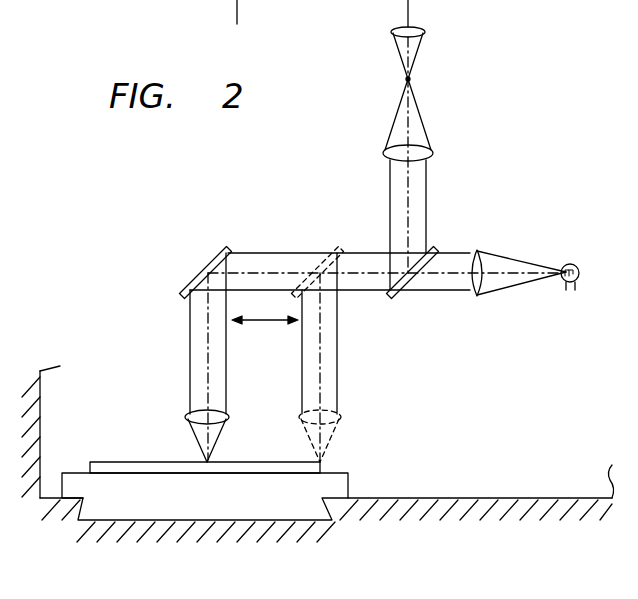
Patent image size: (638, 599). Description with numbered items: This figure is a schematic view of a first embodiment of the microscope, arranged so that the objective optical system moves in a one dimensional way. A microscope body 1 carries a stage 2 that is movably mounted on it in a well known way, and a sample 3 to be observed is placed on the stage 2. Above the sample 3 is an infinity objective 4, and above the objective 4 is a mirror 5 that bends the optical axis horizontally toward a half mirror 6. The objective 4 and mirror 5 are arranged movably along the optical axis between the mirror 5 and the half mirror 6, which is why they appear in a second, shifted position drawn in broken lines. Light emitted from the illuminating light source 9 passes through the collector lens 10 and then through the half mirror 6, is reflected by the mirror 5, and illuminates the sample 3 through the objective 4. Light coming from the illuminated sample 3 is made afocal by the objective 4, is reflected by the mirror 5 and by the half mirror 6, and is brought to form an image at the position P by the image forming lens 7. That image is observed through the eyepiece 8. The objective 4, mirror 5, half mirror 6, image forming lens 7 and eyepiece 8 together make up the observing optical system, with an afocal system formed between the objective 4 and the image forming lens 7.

The microscope body 1 is at (478, 553).
The stage 2 is at (145, 521).
The sample 3 is at (121, 462).
The infinity objective 4 is at (190, 414).
The mirror 5 is at (214, 245).
The half mirror 6 is at (393, 300).
The image forming lens 7 is at (430, 148).
The eyepiece 8 is at (425, 31).
The illuminating light source 9 is at (570, 263).
The collector lens 10 is at (477, 249).
The image position P is at (404, 79).